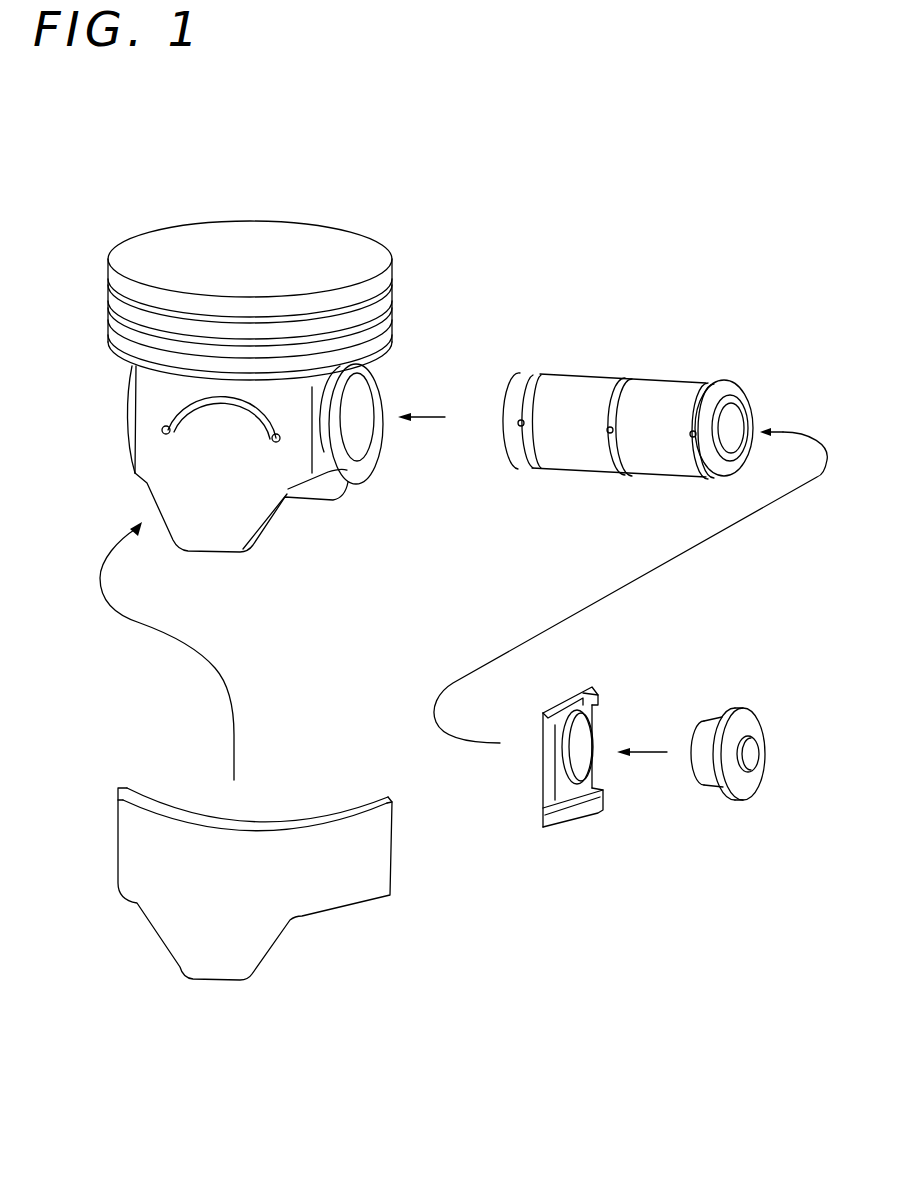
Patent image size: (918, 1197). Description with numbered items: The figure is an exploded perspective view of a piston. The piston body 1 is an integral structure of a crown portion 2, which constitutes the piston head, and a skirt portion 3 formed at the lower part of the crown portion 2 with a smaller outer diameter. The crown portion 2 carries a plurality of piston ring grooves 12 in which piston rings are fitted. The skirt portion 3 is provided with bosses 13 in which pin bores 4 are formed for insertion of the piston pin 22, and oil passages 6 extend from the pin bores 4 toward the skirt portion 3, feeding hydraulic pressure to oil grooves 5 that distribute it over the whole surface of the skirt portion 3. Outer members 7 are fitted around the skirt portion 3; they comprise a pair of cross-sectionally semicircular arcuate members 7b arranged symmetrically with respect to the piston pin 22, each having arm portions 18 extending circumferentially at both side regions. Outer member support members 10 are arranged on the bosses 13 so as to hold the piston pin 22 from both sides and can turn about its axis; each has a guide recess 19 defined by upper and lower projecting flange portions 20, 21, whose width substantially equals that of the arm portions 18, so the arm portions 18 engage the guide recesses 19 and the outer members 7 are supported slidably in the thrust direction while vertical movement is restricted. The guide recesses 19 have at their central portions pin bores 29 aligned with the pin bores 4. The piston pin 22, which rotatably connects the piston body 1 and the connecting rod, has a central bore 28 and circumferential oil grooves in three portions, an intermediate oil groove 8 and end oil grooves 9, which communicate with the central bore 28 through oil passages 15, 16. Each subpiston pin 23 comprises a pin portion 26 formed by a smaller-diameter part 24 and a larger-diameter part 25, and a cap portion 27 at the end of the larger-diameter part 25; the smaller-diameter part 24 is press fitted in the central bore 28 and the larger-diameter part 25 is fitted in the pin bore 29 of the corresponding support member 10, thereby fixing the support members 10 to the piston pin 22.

The piston body 1 is at (255, 384).
The crown portion 2 is at (382, 277).
The skirt portion 3 is at (232, 513).
The pin bores 4 is at (360, 433).
The oil grooves 5 is at (184, 467).
The oil passages 6 is at (162, 428).
The outer members 7 is at (255, 899).
The semicircular arcuate members 7b is at (178, 915).
The oil groove 8 is at (632, 426).
The oil grooves 9 is at (522, 390).
The outer member support members 10 is at (560, 762).
The piston ring grooves 12 is at (113, 322).
The bosses 13 is at (372, 464).
The oil passage 15 is at (607, 432).
The oil passages 16 is at (519, 426).
The arm portions 18 is at (130, 858).
The guide recesses 19 is at (563, 787).
The flange portion 20 is at (548, 708).
The flange portion 21 is at (570, 818).
The piston pin 22 is at (635, 400).
The subpiston pins 23 is at (748, 774).
The smaller-diameter part 24 is at (707, 733).
The larger-diameter part 25 is at (730, 720).
The pin portion 26 is at (748, 748).
The cap portion 27 is at (740, 730).
The central bore 28 is at (725, 432).
The pin bores 29 is at (570, 743).